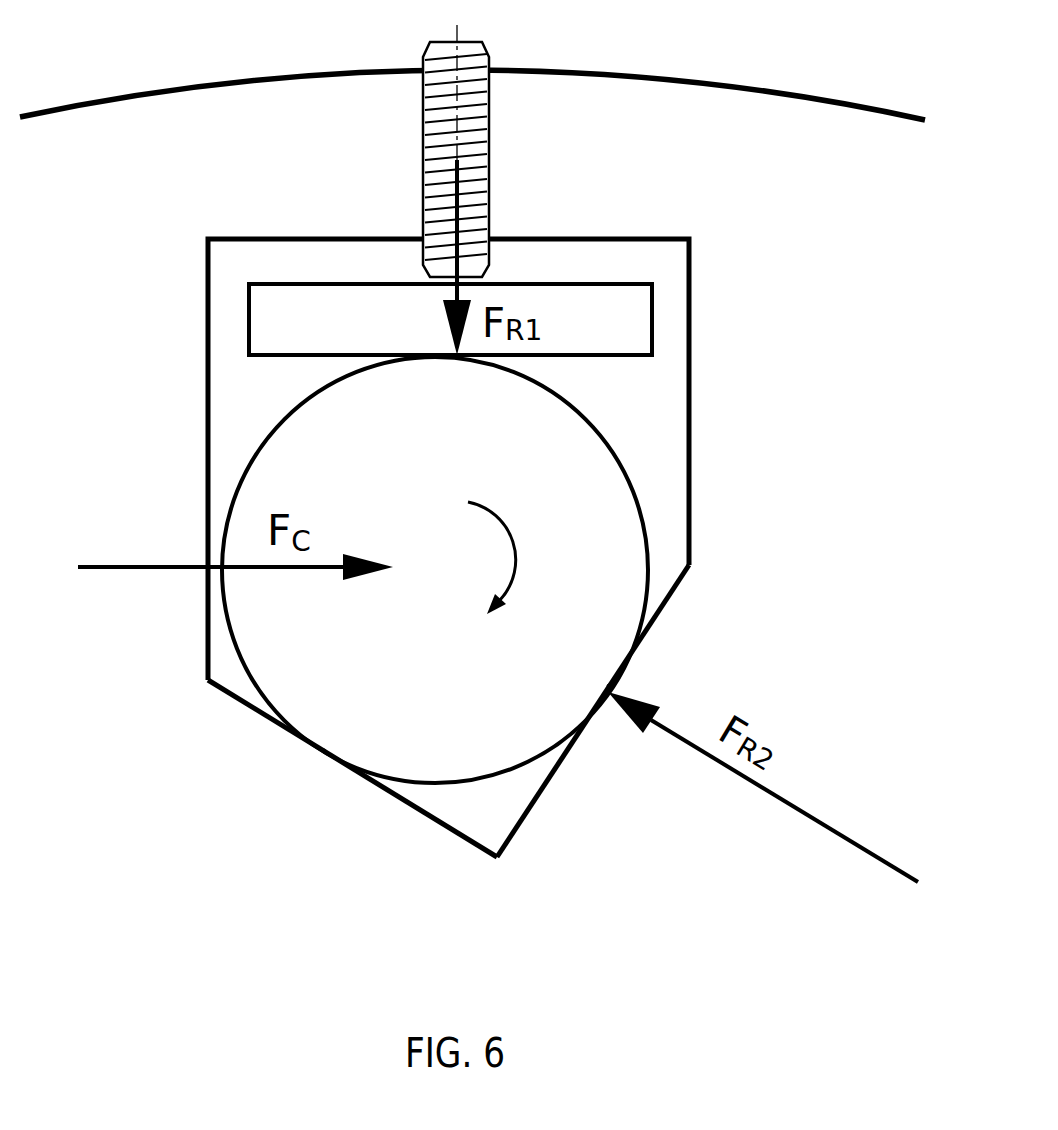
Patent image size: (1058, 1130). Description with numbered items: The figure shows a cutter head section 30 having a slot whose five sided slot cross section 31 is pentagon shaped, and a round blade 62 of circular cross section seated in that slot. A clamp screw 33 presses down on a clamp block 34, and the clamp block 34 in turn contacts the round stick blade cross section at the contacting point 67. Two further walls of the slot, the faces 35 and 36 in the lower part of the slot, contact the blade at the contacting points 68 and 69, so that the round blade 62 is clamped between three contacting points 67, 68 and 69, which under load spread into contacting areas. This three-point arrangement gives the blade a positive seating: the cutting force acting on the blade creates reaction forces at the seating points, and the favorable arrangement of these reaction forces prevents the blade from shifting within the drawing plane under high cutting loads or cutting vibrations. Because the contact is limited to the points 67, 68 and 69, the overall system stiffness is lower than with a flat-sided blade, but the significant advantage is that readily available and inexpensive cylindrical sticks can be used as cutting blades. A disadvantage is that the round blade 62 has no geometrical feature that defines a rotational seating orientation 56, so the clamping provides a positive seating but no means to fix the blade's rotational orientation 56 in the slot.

The cutter head section 30 is at (685, 78).
The five sided slot cross section 31 is at (692, 348).
The screw 33 is at (482, 167).
The clamp block 34 is at (570, 300).
The first contact surface 35 is at (547, 778).
The second contact surface 36 is at (407, 803).
The rotational seating orientation 56 is at (519, 558).
The round blade 62 is at (640, 540).
The contacting point 67 is at (456, 357).
The contacting point 68 is at (608, 689).
The contacting point 69 is at (324, 750).